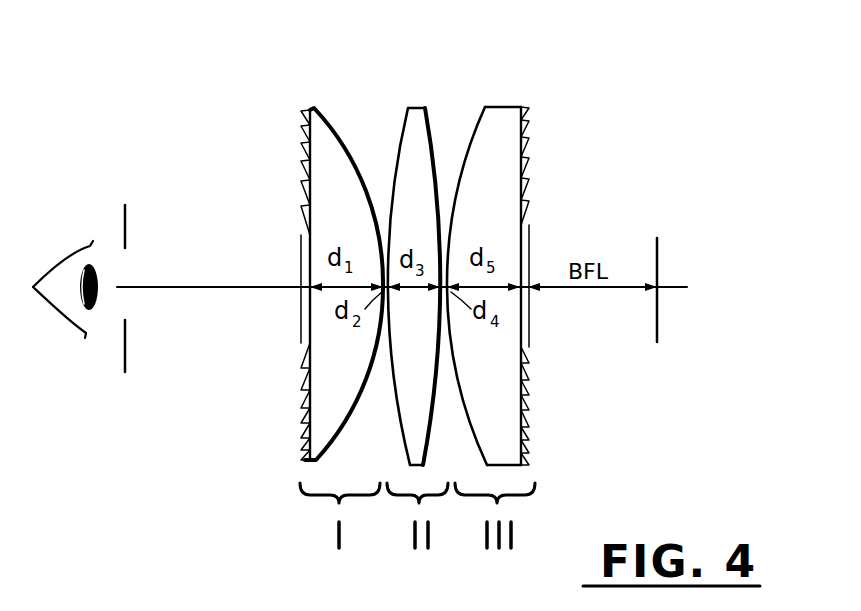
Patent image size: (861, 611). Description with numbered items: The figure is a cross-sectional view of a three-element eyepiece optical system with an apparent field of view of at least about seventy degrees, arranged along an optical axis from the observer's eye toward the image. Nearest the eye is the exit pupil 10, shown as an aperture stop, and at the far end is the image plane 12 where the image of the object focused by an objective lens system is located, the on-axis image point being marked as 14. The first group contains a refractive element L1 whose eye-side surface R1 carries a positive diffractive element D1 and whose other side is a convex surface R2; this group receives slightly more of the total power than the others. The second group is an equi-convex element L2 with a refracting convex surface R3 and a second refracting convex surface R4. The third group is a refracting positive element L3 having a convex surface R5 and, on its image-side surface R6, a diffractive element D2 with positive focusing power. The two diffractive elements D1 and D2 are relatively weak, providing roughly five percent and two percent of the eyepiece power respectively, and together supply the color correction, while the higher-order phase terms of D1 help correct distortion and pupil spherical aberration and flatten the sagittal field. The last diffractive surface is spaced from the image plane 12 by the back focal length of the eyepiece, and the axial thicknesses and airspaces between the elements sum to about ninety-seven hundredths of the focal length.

The exit pupil 10 is at (125, 358).
The image plane 12 is at (657, 338).
The image point on axis 14 is at (670, 302).
The refractive element L1 is at (281, 240).
The equi-convex element L2 is at (402, 237).
The refracting positive element L3 is at (533, 238).
The surface R1 is at (303, 112).
The convex surface R2 is at (333, 118).
The refracting convex surface R3 is at (403, 128).
The second refracting convex surface R4 is at (430, 110).
The convex surface R5 is at (484, 106).
The second surface (Fresnel / diffractive) of lens L3 R6 is at (526, 106).
The positive diffractive element D1 is at (235, 111).
The diffractive element D2 is at (578, 89).
The observer eye is at (65, 289).